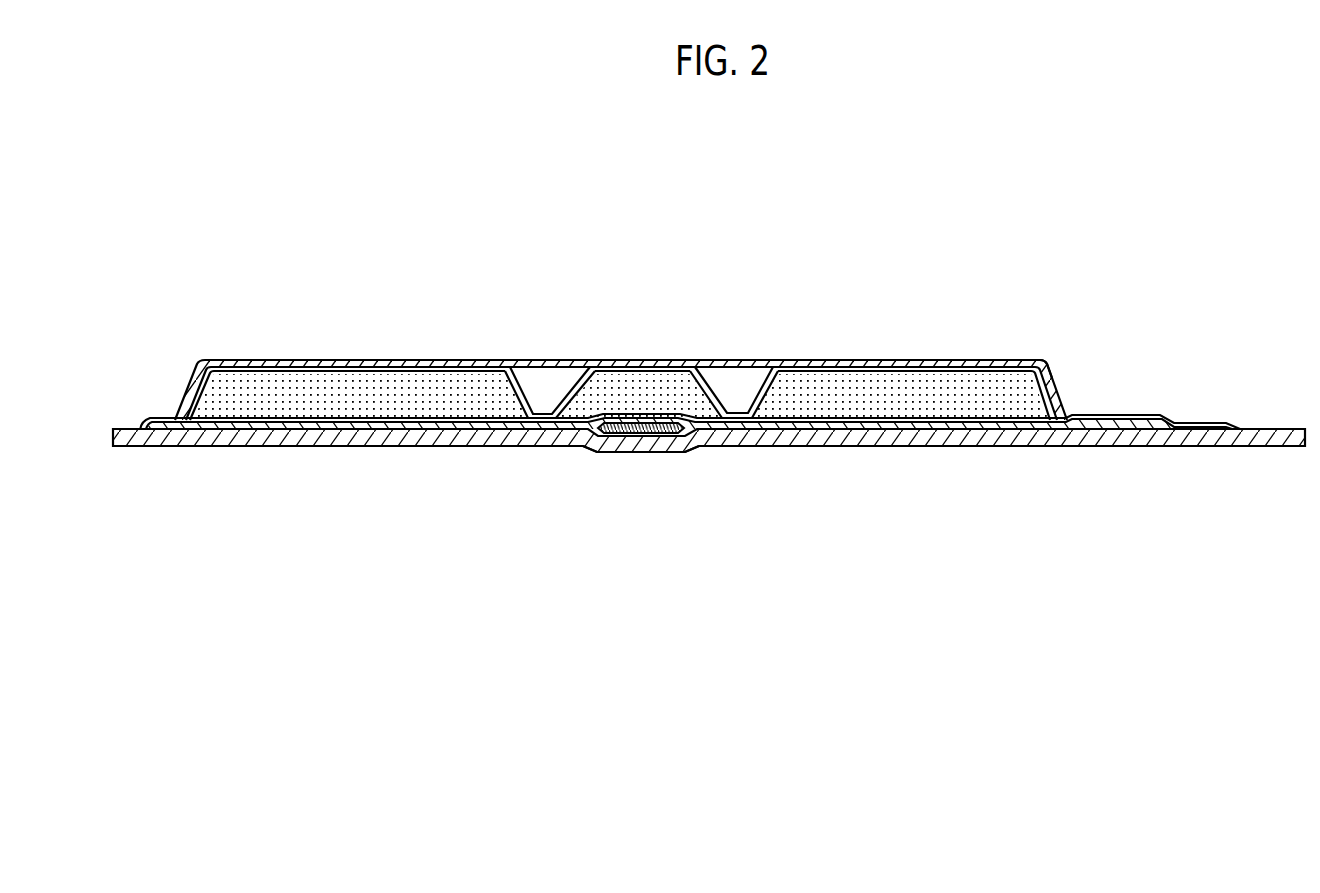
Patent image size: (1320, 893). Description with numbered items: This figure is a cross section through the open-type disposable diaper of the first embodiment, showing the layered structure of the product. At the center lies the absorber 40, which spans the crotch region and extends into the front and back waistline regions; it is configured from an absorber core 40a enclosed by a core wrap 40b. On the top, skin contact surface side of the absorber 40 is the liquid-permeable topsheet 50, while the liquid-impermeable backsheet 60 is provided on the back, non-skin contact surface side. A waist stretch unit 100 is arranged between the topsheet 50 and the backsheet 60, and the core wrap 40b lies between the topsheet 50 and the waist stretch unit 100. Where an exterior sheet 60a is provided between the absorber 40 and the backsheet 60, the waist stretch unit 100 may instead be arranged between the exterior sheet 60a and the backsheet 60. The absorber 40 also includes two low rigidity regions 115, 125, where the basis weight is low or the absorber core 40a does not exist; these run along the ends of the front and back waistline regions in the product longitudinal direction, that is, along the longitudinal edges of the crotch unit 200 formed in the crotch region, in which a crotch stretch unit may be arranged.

The absorber 40 is at (676, 353).
The absorber core 40a is at (1018, 408).
The core wrap 40b is at (1053, 377).
The topsheet 50 is at (1045, 359).
The backsheet 60 is at (709, 470).
The exterior sheet 60a is at (250, 440).
The waist stretch unit 100 is at (1120, 446).
The low rigidity region 115 is at (547, 383).
The low rigidity region 125 is at (736, 385).
The crotch unit 200 is at (652, 452).